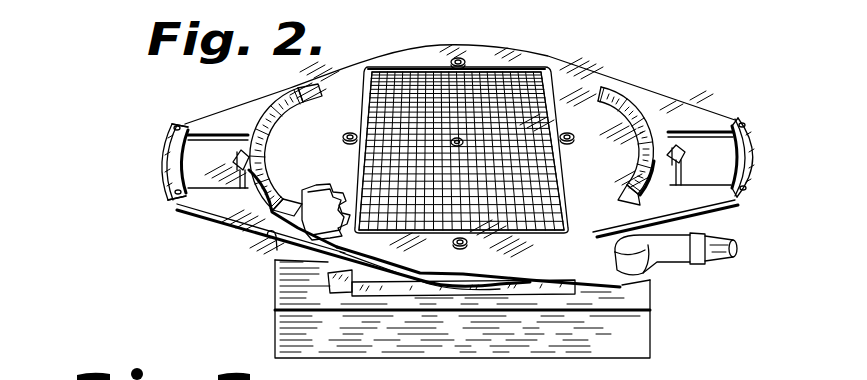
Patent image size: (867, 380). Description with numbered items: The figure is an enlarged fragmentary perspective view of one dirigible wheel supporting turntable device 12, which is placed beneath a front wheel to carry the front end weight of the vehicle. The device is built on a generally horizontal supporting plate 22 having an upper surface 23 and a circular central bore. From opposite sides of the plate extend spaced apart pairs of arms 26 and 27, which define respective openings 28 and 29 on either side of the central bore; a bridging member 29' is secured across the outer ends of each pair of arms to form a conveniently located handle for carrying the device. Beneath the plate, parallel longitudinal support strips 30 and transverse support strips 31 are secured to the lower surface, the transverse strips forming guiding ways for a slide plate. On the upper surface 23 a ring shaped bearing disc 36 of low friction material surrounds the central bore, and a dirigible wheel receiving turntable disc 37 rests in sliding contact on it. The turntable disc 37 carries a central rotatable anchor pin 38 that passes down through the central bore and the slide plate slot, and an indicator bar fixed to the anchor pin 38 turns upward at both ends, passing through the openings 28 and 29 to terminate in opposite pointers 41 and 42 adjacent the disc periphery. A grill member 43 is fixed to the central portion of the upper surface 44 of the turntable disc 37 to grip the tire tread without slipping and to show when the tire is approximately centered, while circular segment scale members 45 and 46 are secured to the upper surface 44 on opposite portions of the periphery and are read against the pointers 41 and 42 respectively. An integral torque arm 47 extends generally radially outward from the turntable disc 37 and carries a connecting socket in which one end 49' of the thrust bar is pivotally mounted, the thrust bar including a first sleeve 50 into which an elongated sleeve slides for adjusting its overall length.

The turntable device 12 is at (570, 70).
The supporting plate 22 is at (238, 230).
The upper surface 23 is at (272, 250).
The pair of arms 26 is at (702, 186).
The pair of arms 27 is at (200, 192).
The opening 28 is at (718, 147).
The opening 29 is at (184, 139).
The bridging member 29' is at (452, 159).
The longitudinal support strip 30 is at (515, 293).
The transverse support strip 31 is at (342, 292).
The bearing disc 36 is at (335, 200).
The turntable disc 37 is at (347, 78).
The anchor pin 38 is at (463, 140).
The pointer 41 is at (674, 148).
The pointer 42 is at (238, 150).
The grill member 43 is at (513, 67).
The upper surface 44 is at (423, 58).
The scale member 45 is at (635, 97).
The scale member 46 is at (283, 102).
The torque arm 47 is at (622, 283).
The end of thrust bar 49' is at (707, 280).
The first sleeve 50 is at (722, 263).